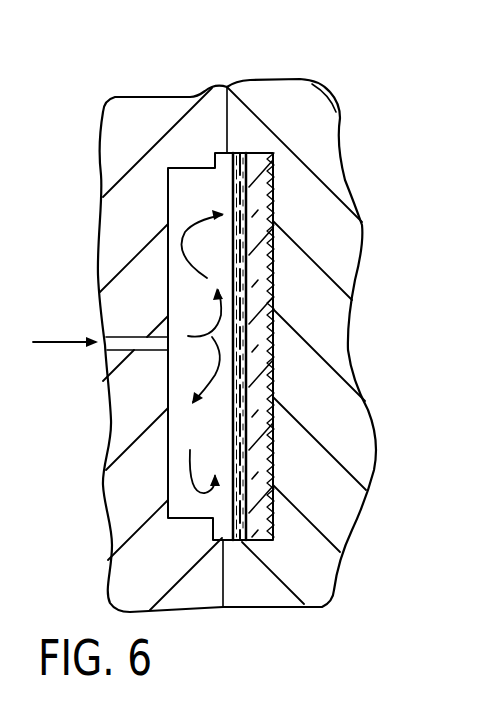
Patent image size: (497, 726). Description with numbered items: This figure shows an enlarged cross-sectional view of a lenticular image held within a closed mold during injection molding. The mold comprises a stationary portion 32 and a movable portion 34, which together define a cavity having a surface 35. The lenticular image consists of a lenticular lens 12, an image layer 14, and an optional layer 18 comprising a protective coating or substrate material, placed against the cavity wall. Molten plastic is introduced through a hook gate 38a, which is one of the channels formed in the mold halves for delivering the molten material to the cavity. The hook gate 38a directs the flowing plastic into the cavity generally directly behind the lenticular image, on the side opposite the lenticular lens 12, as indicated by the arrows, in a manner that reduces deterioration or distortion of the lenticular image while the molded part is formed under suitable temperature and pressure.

The lenticular lens 12 is at (273, 160).
The image layer 14 is at (243, 151).
The optional layer 18 is at (240, 152).
The stationary portion 32 is at (350, 223).
The movable portion 34 is at (146, 117).
The surface 35 is at (184, 172).
The hook gate 38a is at (122, 381).